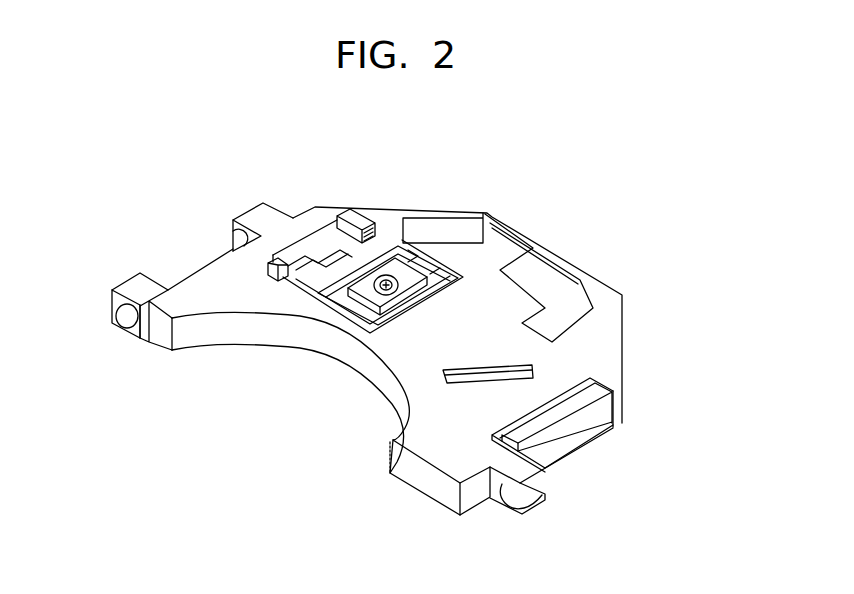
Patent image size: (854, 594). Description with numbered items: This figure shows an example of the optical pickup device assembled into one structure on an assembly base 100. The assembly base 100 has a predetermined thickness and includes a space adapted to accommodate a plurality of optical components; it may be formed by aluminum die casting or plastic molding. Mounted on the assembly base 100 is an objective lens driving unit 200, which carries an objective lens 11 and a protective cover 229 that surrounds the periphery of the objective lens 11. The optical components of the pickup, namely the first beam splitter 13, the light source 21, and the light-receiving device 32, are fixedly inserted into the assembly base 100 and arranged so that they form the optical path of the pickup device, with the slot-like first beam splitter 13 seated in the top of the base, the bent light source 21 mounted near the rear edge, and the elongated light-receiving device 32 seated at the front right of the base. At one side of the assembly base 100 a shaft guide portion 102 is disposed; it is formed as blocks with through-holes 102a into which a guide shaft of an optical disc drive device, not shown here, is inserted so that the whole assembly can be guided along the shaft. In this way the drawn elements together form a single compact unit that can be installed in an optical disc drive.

The assembly base 100 is at (608, 347).
The shaft guide portion 102 is at (258, 218).
The through-holes 102a is at (243, 240).
The objective lens driving unit 200 is at (316, 252).
The protective cover 229 is at (422, 258).
The objective lens 11 is at (385, 282).
The first beam splitter 13 is at (490, 378).
The light source 21 is at (555, 287).
The light-receiving device 32 is at (573, 438).